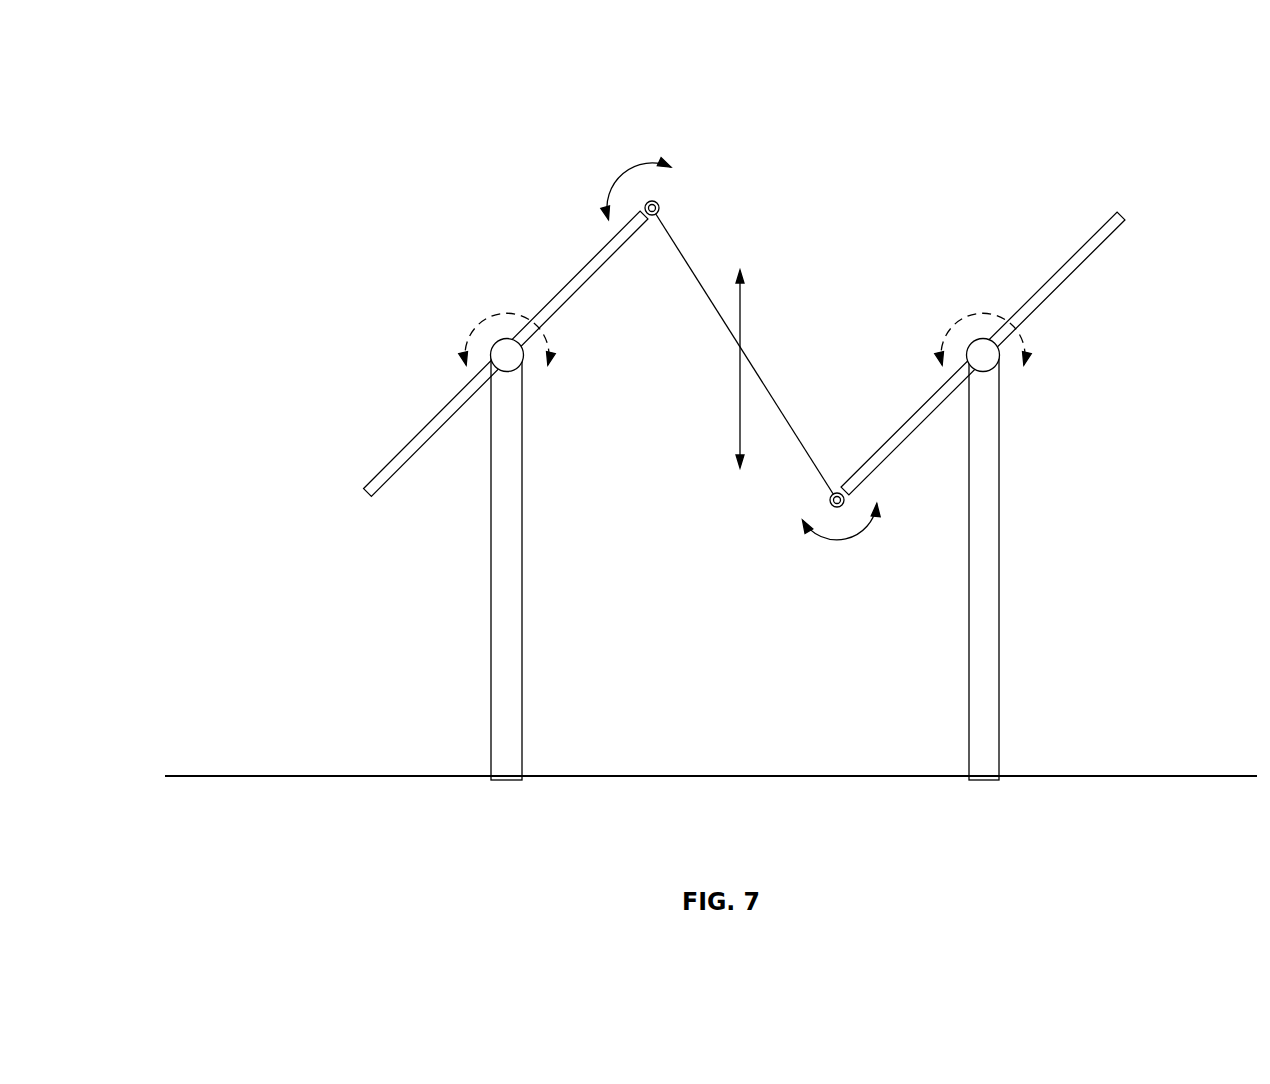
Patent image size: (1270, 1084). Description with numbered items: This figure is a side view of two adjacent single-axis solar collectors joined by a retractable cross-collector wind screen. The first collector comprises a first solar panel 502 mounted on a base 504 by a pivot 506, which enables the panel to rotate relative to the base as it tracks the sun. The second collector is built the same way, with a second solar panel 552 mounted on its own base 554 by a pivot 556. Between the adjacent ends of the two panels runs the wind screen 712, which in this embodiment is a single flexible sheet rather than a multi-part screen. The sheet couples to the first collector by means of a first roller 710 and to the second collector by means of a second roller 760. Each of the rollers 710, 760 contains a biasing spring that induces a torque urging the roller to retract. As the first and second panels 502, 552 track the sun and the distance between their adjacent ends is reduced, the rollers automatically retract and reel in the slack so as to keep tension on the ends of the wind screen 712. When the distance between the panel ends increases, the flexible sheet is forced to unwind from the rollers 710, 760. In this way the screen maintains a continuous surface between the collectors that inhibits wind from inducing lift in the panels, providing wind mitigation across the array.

The first solar panel 502 is at (418, 432).
The base 504 is at (491, 647).
The pivot 506 is at (492, 346).
The second solar panel 552 is at (1088, 238).
The base 554 is at (968, 660).
The pivot 556 is at (1000, 358).
The first roller 710 is at (657, 202).
The wind screen 712 is at (697, 262).
The second roller 760 is at (833, 493).